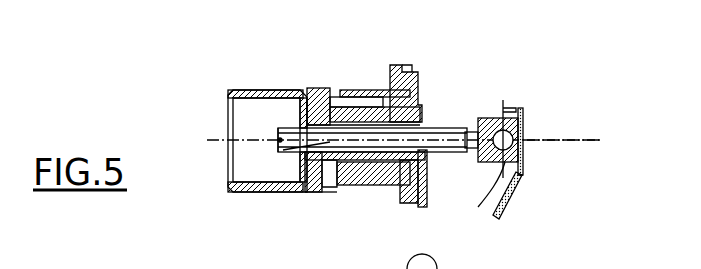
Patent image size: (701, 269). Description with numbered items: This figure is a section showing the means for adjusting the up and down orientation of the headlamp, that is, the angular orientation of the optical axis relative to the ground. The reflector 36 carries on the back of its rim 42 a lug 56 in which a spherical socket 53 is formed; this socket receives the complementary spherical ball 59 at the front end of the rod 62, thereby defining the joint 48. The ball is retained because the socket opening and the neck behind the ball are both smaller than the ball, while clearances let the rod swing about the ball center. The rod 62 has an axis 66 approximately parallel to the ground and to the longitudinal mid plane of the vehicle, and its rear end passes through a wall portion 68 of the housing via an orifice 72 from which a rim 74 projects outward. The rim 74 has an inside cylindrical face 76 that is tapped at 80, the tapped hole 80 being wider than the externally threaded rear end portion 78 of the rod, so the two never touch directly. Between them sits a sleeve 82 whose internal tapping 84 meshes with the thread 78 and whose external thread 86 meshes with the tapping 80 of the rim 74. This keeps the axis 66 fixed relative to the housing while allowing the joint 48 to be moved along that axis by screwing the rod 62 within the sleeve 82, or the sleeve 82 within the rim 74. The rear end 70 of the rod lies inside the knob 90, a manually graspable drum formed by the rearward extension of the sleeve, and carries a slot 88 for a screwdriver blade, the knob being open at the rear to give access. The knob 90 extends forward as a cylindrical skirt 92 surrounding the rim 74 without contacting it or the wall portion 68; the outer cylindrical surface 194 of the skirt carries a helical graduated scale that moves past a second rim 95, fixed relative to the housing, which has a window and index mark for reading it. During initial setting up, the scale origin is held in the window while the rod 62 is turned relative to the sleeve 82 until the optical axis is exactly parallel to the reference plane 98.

The reference plane 98 is at (132, 0).
The knob 90 is at (251, 90).
The rear end of rod 70 is at (278, 130).
The slot 88 is at (278, 140).
The axis 66 is at (217, 142).
The internal tapping 84 is at (292, 152).
The outer cylindrical surface 194 is at (306, 92).
The externally threaded rear end portion 78 is at (313, 95).
The cylindrical skirt 92 is at (330, 92).
The external thread 86 is at (368, 90).
The tapped hole 80 is at (392, 65).
The sleeve 82 is at (410, 70).
The inside cylindrical face 76 is at (452, 127).
The rod 62 is at (494, 117).
The lug 56 is at (504, 100).
The spherical socket 53 is at (514, 112).
The joint 48 is at (533, 139).
The rim 42 is at (521, 174).
The reflector 36 is at (507, 203).
The spherical ball 59 is at (490, 216).
The orifice 72 is at (424, 160).
The wall portion 68 is at (404, 202).
The second rim 95 is at (366, 190).
The rim 74 is at (328, 192).